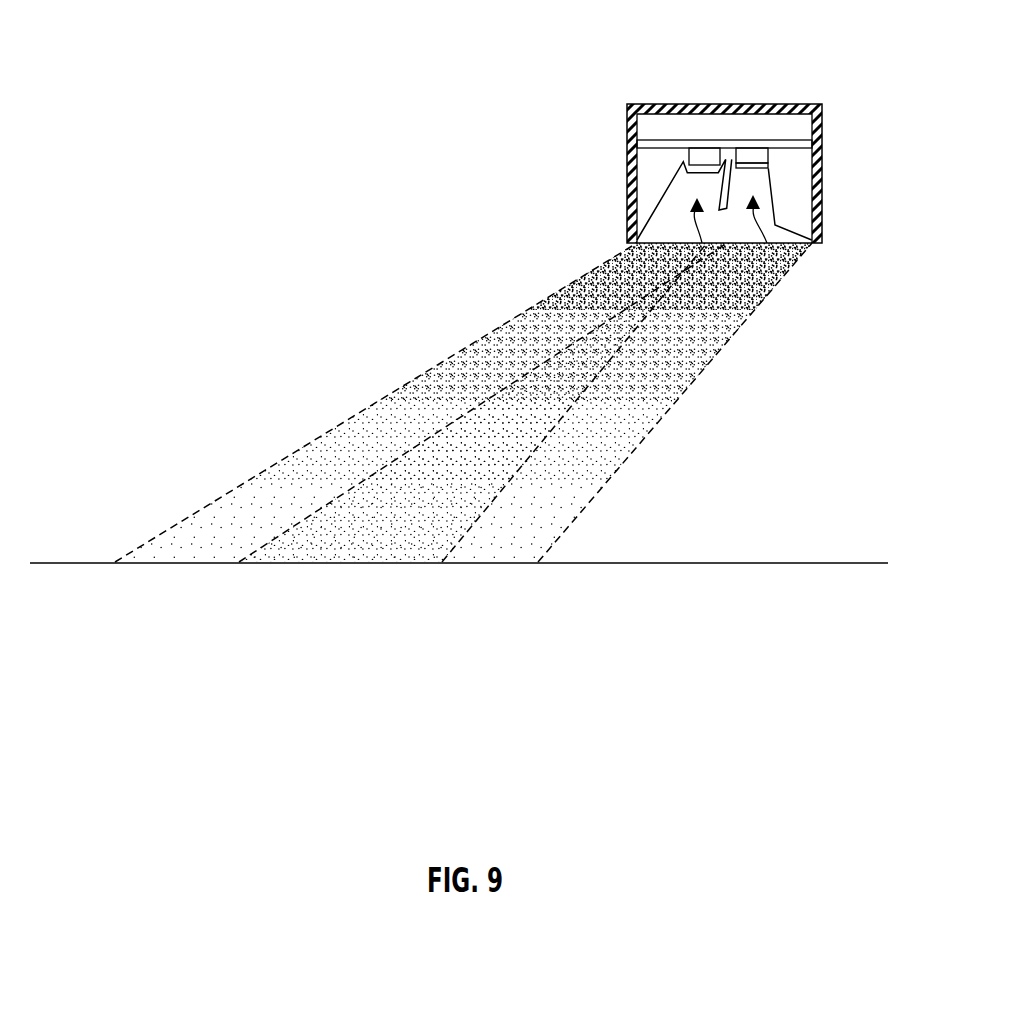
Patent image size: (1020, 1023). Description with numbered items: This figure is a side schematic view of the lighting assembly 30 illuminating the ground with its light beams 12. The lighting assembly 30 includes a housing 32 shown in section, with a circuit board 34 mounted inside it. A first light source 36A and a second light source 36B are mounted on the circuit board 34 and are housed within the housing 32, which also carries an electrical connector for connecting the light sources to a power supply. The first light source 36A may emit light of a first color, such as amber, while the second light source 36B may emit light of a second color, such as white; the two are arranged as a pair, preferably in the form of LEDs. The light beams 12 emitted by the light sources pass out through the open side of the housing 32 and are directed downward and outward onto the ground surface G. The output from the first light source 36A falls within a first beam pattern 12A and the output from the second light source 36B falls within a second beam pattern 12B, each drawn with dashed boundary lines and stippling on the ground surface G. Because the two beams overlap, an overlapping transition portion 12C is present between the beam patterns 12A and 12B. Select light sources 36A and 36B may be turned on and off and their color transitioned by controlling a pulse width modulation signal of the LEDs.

The lighting assembly 30 is at (713, 128).
The housing 32 is at (823, 157).
The circuit board 34 is at (650, 148).
The first plurality of light sources 36A is at (703, 150).
The second plurality of light sources 36B is at (758, 152).
The light beams 12 is at (702, 244).
The first beam pattern 12A is at (685, 373).
The second beam pattern 12B is at (410, 387).
The overlapping transition portion 12C is at (375, 542).
The ground surface G is at (790, 562).